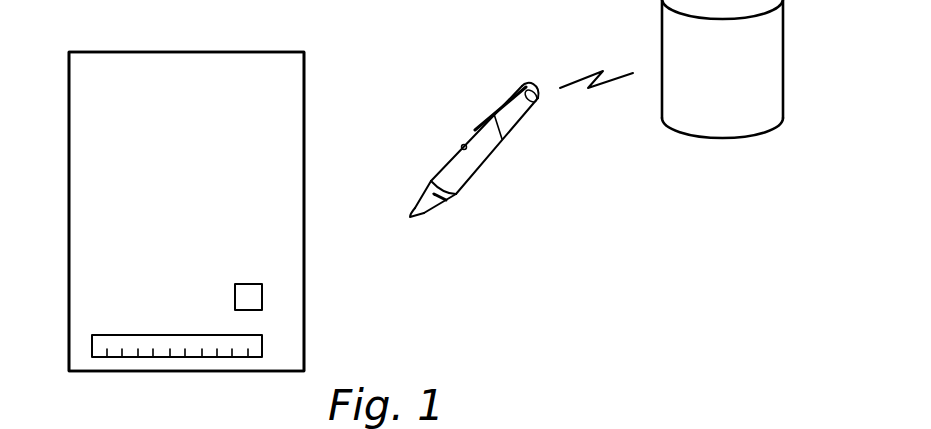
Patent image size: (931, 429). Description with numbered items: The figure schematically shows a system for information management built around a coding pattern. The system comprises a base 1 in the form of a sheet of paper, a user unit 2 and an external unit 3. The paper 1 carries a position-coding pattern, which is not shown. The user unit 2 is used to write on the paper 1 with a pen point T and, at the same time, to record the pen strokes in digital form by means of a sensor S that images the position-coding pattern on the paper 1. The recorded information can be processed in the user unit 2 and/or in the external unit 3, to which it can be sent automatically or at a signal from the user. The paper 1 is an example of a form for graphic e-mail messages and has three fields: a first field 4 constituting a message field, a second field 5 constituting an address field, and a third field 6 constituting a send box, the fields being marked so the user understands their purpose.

The base 1 is at (304, 237).
The user unit 2 is at (444, 167).
The external unit 3 is at (758, 77).
The first field 4 is at (102, 258).
The second field 5 is at (118, 341).
The third field 6 is at (257, 296).
The pen point T is at (412, 214).
The sensor S is at (443, 197).